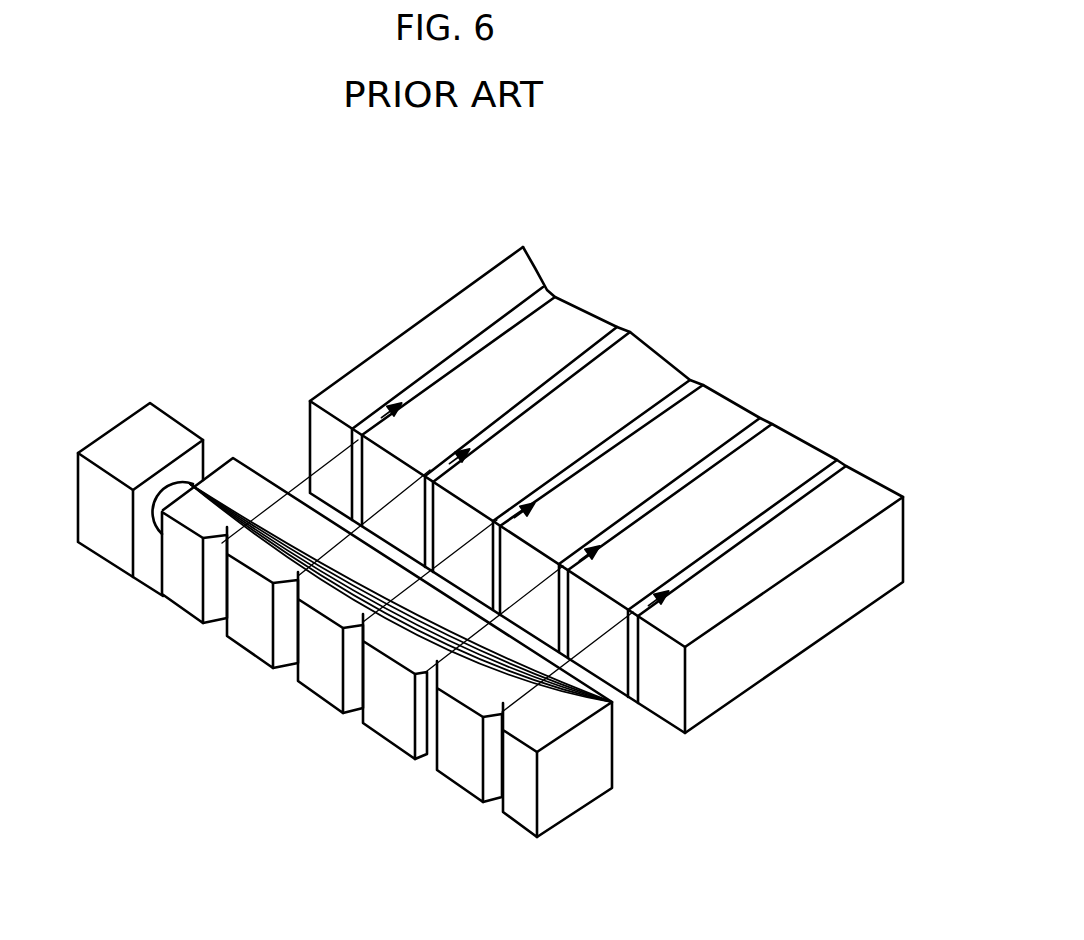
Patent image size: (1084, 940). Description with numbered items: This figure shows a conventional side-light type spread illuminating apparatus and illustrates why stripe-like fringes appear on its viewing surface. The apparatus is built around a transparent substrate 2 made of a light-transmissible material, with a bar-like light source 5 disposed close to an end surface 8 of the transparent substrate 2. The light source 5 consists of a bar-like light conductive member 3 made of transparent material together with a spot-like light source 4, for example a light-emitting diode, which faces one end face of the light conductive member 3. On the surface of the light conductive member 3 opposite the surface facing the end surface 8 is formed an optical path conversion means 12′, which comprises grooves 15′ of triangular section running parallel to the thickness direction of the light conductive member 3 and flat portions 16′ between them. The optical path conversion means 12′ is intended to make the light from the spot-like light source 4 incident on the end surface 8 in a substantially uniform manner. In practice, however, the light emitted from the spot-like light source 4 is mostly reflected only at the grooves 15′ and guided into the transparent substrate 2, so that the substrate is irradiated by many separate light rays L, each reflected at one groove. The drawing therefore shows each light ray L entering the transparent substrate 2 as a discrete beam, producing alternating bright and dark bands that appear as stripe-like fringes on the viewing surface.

The transparent substrate 2 is at (747, 658).
The light conductive member 3 is at (242, 487).
The spot-like light source 4 is at (143, 443).
The light source 5 is at (267, 294).
The end surface 8 is at (665, 703).
The optical path conversion means 12′ is at (270, 727).
The grooves 15′ is at (212, 605).
The flat portions 16′ is at (255, 628).
The light rays L is at (415, 393).